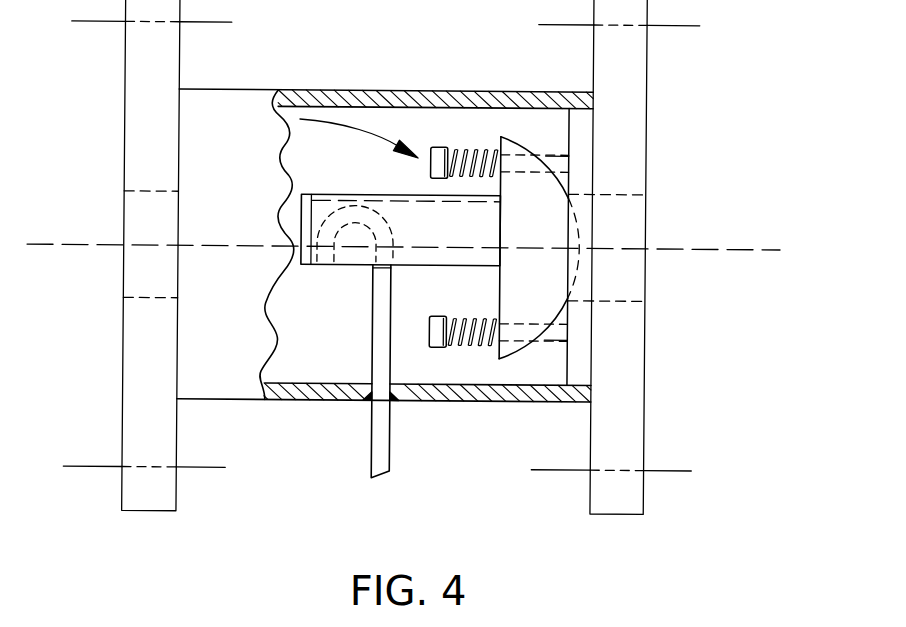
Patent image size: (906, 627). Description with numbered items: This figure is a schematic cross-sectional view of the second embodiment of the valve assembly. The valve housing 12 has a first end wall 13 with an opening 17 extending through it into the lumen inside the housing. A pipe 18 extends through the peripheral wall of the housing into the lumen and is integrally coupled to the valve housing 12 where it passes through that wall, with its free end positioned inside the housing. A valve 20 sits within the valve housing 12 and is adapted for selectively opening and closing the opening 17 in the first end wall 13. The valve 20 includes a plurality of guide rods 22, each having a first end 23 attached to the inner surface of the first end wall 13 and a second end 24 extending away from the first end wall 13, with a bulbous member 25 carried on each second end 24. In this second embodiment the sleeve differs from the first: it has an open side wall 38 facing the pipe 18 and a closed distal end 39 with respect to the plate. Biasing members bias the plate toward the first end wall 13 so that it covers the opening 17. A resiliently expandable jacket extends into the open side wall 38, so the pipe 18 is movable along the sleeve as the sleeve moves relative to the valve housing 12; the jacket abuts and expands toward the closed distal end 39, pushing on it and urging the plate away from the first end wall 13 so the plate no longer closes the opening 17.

The valve housing 12 is at (180, 90).
The first end wall 13 is at (620, 432).
The opening 17 is at (617, 302).
The pipe 18 is at (377, 437).
The valve 20 is at (300, 119).
The guide rods 22 is at (566, 155).
The first end 23 is at (568, 173).
The second end 24 is at (452, 149).
The bulbous member 25 is at (430, 148).
The open side wall 38 is at (343, 268).
The closed distal end 39 is at (301, 226).